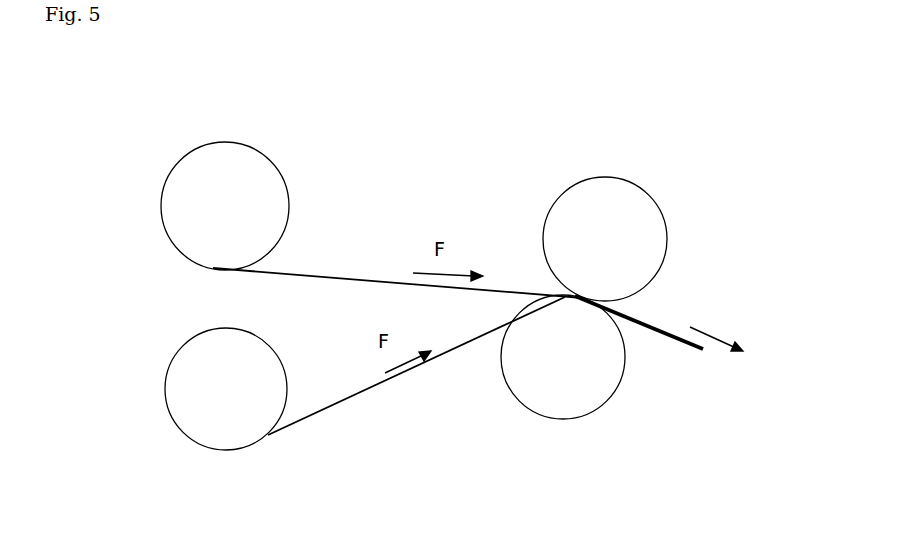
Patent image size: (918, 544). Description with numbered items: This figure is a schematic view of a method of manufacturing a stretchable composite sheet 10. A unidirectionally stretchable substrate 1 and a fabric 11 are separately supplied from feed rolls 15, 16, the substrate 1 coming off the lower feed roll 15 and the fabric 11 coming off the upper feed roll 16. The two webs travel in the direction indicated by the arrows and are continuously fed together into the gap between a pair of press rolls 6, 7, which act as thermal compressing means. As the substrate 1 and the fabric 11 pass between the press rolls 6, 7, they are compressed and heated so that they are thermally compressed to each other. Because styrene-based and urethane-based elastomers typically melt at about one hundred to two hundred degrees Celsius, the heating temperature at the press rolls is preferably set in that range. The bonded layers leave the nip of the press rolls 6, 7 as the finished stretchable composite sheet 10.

The feed roll 16 is at (237, 143).
The feed roll 15 is at (193, 443).
The press roll 6 is at (623, 179).
The press roll 7 is at (548, 418).
The fabric 11 is at (355, 277).
The unidirectionally stretchable substrate 1 is at (355, 397).
The stretchable composite sheet 10 is at (657, 323).